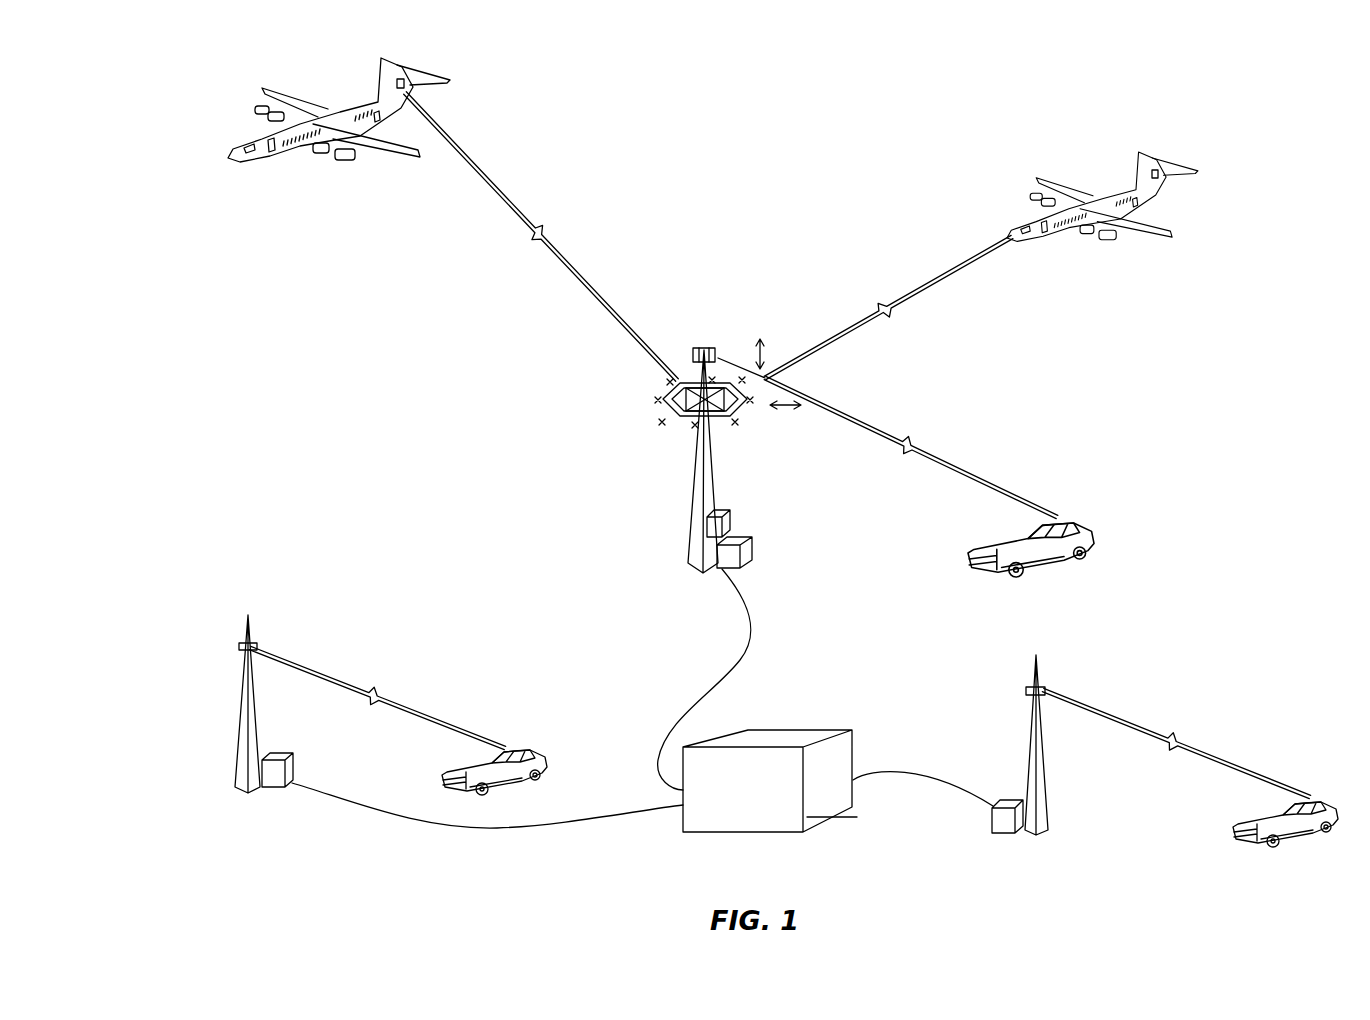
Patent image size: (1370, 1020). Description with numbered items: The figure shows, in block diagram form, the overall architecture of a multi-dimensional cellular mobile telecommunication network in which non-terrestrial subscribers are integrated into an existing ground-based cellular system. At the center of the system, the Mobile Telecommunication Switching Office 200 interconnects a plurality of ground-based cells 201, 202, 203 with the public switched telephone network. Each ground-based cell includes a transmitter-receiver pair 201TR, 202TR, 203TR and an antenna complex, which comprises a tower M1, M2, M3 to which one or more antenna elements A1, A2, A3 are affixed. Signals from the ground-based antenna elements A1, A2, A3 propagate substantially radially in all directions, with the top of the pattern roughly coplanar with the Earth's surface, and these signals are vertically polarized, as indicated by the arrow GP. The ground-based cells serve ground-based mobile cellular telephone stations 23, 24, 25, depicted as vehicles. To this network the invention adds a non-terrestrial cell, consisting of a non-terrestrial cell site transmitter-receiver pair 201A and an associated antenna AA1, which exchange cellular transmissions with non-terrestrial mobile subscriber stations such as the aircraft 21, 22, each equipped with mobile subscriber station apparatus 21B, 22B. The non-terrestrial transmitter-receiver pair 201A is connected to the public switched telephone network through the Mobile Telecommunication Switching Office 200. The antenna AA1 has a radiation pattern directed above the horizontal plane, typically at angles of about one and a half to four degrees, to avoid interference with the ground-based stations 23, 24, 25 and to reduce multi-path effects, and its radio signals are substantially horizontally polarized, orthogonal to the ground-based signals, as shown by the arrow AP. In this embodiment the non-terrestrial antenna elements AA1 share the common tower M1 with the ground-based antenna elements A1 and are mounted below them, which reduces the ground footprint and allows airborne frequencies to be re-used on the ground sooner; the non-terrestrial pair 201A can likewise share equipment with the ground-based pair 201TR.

The aircraft 21 is at (368, 143).
The mobile subscriber station apparatus 21B is at (420, 83).
The aircraft 22 is at (1133, 224).
The mobile subscriber station apparatus 22B is at (1178, 173).
The ground-based mobile cellular telephone station 23 is at (1057, 517).
The ground-based mobile cellular telephone station 24 is at (515, 747).
The ground-based mobile cellular telephone station 25 is at (1310, 796).
The Mobile Telecommunication Switching Office 200 is at (822, 733).
The ground-based cell 201 is at (708, 427).
The non-terrestrial cell site transmitter-receiver pair 201A is at (730, 525).
The transmitter-receiver pair 201TR is at (752, 552).
The ground-based cell 202 is at (262, 704).
The transmitter-receiver pair 202TR is at (283, 767).
The ground-based cell 203 is at (1059, 770).
The transmitter-receiver pair 203TR is at (997, 832).
The antenna element A1 is at (706, 346).
The non-terrestrial cell site antenna AA1 is at (660, 404).
The antenna element A2 is at (245, 647).
The antenna element A3 is at (1043, 690).
The tower M1 is at (718, 457).
The tower M2 is at (258, 705).
The tower M3 is at (1045, 745).
The arrow indicating vertical polarization GP is at (776, 354).
The arrow indicating horizontal polarization AP is at (785, 419).